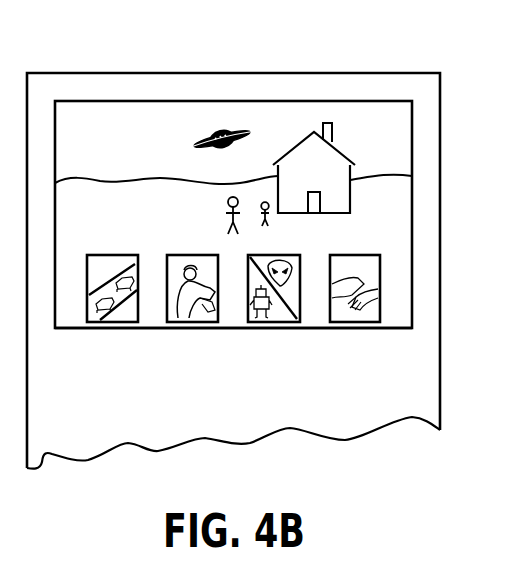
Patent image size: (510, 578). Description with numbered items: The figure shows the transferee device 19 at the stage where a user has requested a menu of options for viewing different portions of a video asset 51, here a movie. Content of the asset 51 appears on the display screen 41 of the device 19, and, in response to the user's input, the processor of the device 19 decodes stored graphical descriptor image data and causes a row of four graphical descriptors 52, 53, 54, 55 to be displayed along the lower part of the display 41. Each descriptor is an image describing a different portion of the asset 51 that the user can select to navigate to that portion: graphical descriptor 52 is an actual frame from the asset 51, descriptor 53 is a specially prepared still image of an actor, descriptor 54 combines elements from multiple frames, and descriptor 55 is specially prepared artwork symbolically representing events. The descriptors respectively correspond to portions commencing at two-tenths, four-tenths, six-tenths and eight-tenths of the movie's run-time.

The transferee device 19 is at (308, 73).
The asset 51 is at (124, 127).
The display screen 41 is at (62, 328).
The graphical descriptor 52 is at (118, 322).
The graphical descriptor 53 is at (177, 322).
The graphical descriptor 54 is at (255, 322).
The graphical descriptor 55 is at (340, 322).